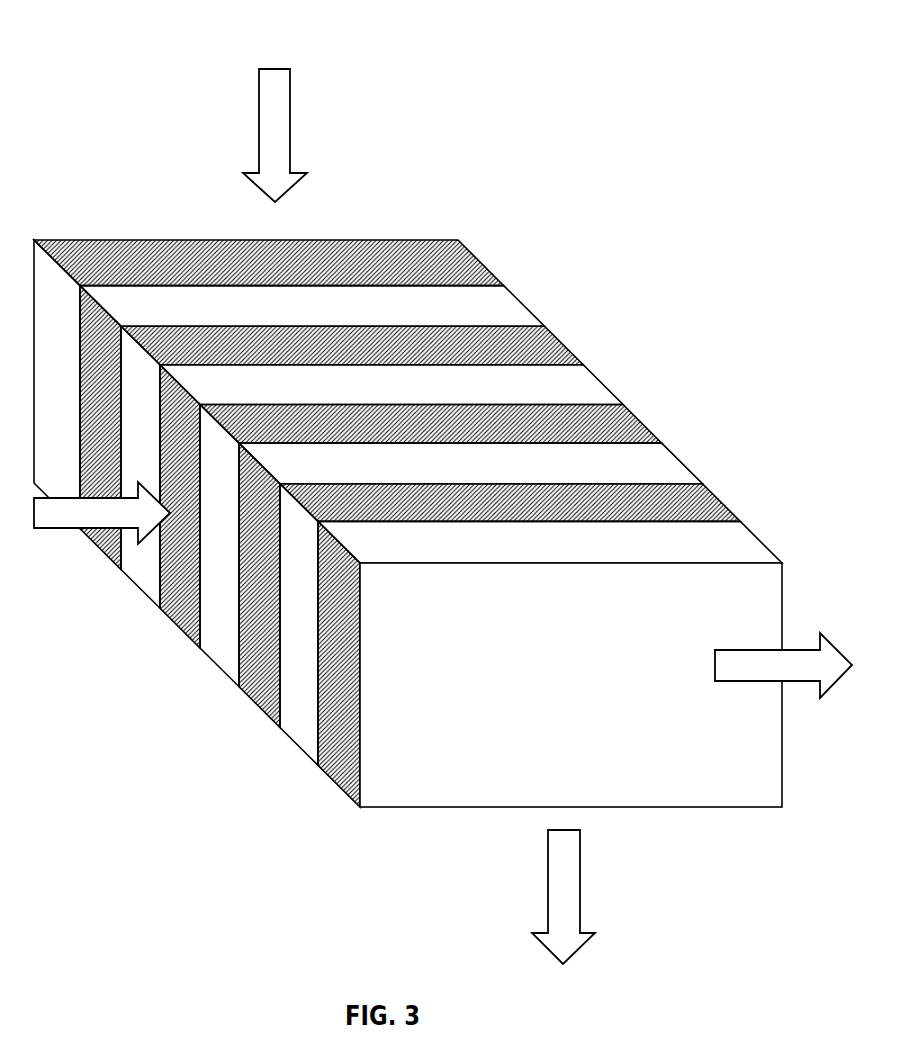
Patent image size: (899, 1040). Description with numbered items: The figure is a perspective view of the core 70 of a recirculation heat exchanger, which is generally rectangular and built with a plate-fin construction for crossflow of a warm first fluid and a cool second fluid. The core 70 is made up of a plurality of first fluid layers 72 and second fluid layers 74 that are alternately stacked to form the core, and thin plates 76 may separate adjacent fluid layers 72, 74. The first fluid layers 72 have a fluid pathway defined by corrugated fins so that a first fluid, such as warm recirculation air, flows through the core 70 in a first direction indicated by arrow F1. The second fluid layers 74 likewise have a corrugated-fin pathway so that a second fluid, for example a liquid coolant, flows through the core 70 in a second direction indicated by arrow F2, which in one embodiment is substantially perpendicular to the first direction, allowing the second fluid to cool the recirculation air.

The core 70 is at (408, 529).
The first fluid layers 72 is at (258, 688).
The second fluid layers 74 is at (627, 420).
The thin plates 76 is at (160, 580).
The arrow F1 is at (62, 530).
The arrow F2 is at (275, 68).